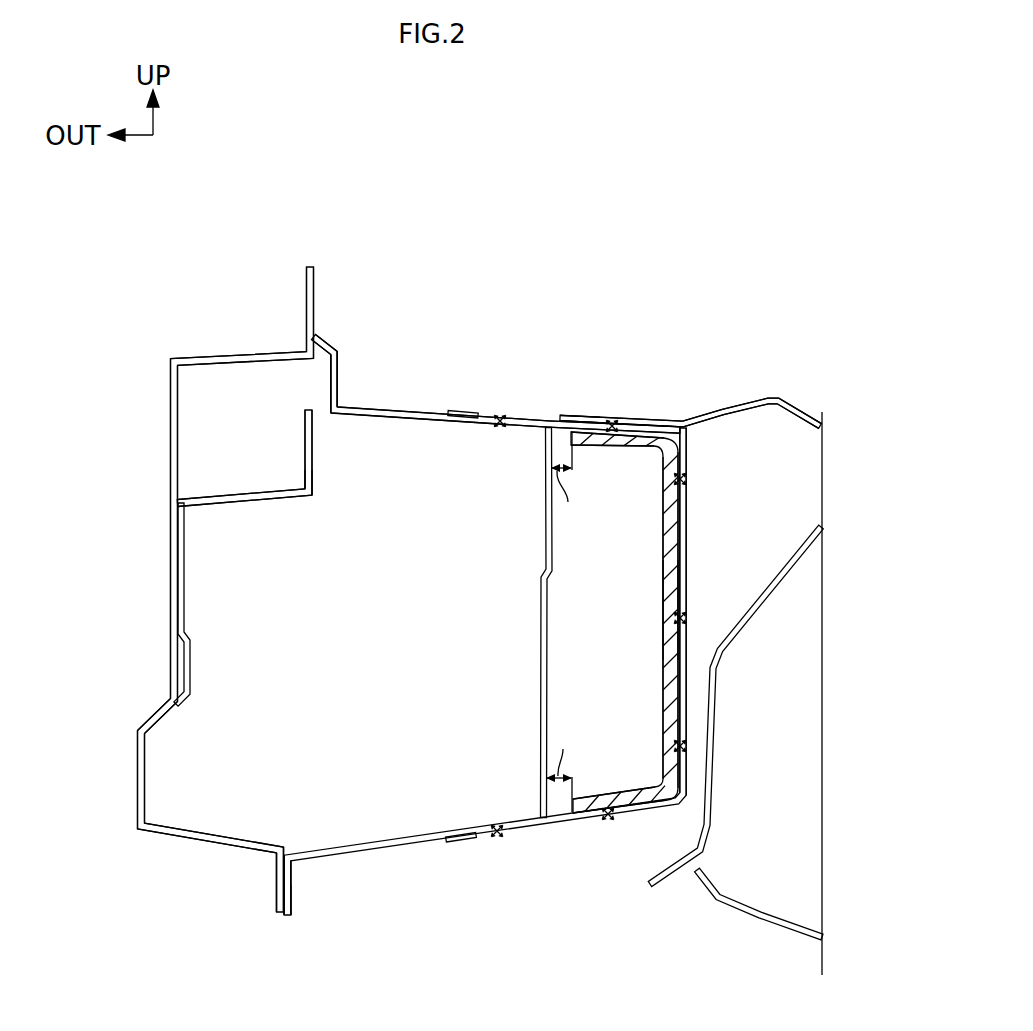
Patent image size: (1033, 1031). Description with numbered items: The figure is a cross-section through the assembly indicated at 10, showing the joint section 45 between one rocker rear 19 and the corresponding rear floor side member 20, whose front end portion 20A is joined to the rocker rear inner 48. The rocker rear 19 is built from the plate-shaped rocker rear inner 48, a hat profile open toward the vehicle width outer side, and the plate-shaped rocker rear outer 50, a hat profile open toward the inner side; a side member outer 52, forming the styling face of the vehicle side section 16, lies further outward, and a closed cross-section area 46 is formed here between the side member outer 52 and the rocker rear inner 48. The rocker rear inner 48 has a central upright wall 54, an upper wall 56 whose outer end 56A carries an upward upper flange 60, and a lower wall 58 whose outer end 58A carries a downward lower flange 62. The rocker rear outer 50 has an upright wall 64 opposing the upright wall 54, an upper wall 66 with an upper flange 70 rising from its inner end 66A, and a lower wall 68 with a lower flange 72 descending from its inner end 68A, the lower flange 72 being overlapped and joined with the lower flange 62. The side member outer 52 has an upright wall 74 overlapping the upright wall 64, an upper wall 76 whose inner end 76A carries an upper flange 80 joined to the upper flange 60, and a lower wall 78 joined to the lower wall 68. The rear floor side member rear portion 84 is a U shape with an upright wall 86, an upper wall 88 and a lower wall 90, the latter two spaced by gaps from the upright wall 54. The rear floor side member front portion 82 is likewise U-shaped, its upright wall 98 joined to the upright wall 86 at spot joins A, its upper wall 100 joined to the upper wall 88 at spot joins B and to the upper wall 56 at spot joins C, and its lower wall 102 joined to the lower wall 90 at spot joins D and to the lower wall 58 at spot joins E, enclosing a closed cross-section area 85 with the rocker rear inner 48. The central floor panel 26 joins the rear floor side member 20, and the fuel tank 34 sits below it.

The vehicle pillar structure 10 is at (384, 211).
The vehicle side section 16 is at (126, 386).
The rocker rear 19 is at (373, 316).
The rear floor side member 20 is at (557, 402).
The front end portion of rear floor side member 20A is at (520, 410).
The central floor panel 26 is at (747, 410).
The fuel tank 34 is at (758, 919).
The joint section 45 is at (609, 326).
The closed cross-section area 46 is at (340, 628).
The rocker rear inner 48 is at (377, 402).
The rocker rear outer 50 is at (232, 490).
The side wall 52 is at (167, 432).
The upright wall 54 is at (543, 655).
The upper wall 56 is at (418, 404).
The outer end of upper wall 56A is at (336, 411).
The lower wall 58 is at (372, 855).
The outer end of lower wall 58A is at (289, 856).
The upper flange 60 is at (340, 350).
The lower flange 62 is at (291, 898).
The upright wall 64 is at (184, 612).
The upper wall 66 is at (243, 500).
The inner end of upper wall 66A is at (312, 500).
The lower wall 68 is at (193, 822).
The inner end of lower wall 68A is at (282, 843).
The upper flange 70 is at (305, 437).
The lower flange 72 is at (277, 884).
The upright wall 74 is at (172, 590).
The upper wall 76 is at (206, 357).
The inner end of upper wall 76A is at (311, 342).
The lower wall 78 is at (163, 836).
The upper flange 80 is at (305, 293).
The rear floor side member front portion 82 is at (693, 507).
The rear floor side member rear portion 84 is at (654, 556).
The closed cross-section area 85 is at (573, 656).
The upright wall 86 is at (666, 610).
The upper wall 88 is at (612, 448).
The lower wall 90 is at (616, 801).
The upright wall 98 is at (686, 547).
The upper wall 100 is at (452, 407).
The lower wall 102 is at (478, 848).
The spot joins A is at (688, 478).
The spot joins B is at (612, 421).
The spot joins C is at (498, 412).
The spot joins D is at (607, 824).
The spot joins E is at (497, 840).